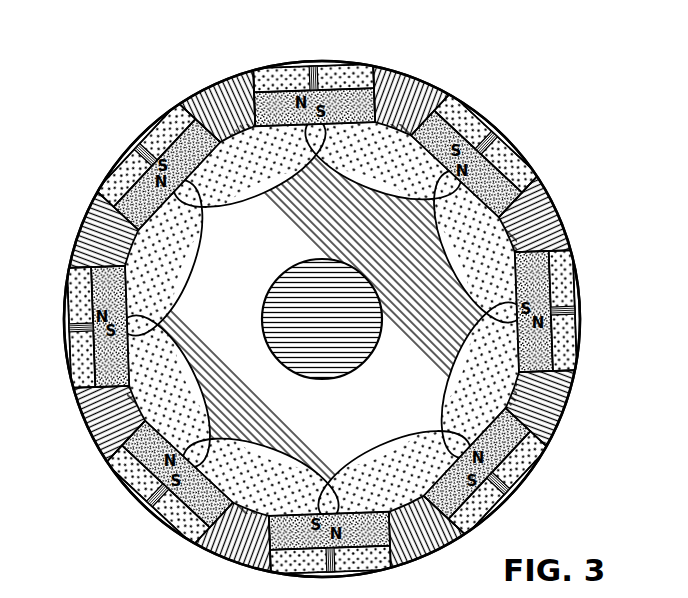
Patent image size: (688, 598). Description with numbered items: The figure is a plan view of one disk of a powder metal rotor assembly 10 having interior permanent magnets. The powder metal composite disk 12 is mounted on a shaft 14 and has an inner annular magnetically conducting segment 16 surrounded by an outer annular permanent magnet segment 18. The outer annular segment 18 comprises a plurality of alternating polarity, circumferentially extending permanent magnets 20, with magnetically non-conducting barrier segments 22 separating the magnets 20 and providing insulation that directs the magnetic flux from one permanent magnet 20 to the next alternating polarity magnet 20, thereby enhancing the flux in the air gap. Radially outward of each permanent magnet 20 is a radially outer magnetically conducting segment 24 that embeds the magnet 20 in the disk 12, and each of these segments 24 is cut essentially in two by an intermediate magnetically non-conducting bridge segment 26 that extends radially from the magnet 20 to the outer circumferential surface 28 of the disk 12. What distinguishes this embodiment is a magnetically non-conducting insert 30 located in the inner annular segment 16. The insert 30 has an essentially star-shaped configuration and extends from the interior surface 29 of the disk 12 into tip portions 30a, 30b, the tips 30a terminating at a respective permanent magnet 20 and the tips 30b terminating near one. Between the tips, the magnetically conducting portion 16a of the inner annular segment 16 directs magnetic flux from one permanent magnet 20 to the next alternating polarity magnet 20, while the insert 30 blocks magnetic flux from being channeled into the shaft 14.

The powder metal rotor assembly 10 is at (74, 116).
The powder metal composite disk 12 is at (484, 110).
The shaft 14 is at (335, 335).
The inner annular magnetically conducting segment 16 is at (462, 200).
The magnetically conducting portion 16a is at (256, 191).
The outer annular permanent magnet segment 18 is at (167, 117).
The permanent magnet 20 is at (88, 292).
The magnetically non-conducting barrier segment 22 is at (544, 213).
The radially outer magnetically conducting segment 24 is at (331, 65).
The intermediate magnetically non-conducting bridge segment 26 is at (573, 310).
The outer circumferential surface 28 is at (573, 258).
The interior surface 29 is at (273, 287).
The magnetically non-conducting insert 30 is at (339, 423).
The tip portion 30a is at (317, 152).
The tip portion 30b is at (205, 207).